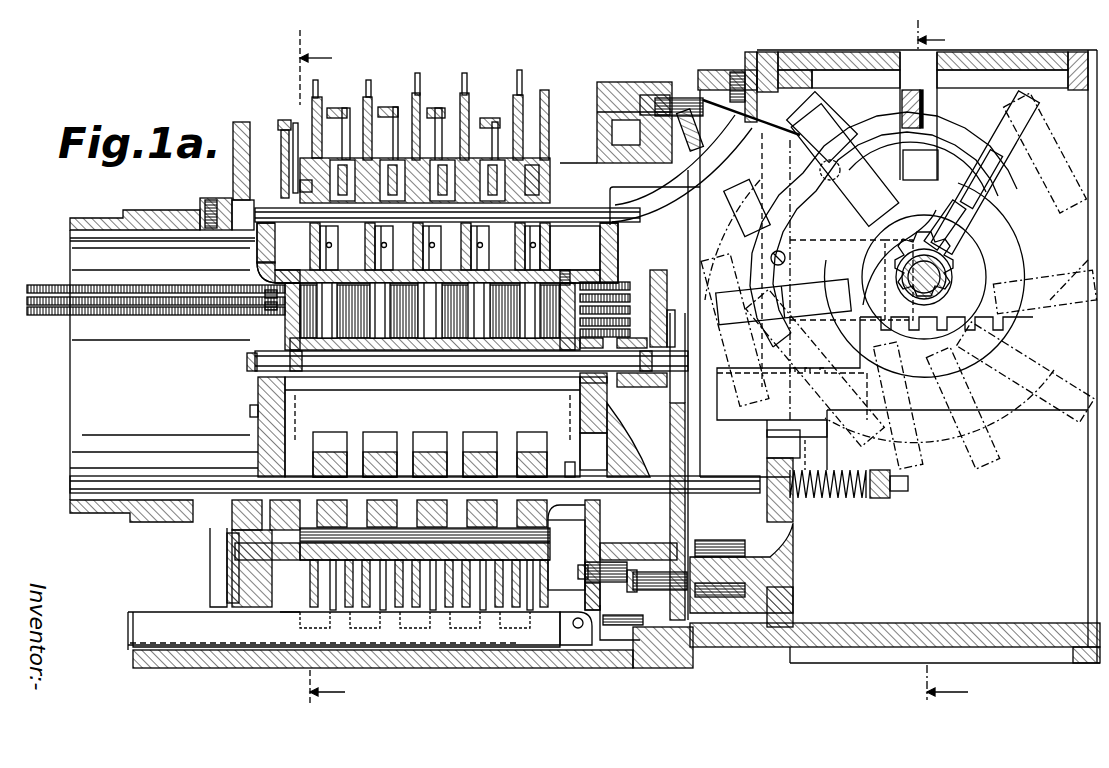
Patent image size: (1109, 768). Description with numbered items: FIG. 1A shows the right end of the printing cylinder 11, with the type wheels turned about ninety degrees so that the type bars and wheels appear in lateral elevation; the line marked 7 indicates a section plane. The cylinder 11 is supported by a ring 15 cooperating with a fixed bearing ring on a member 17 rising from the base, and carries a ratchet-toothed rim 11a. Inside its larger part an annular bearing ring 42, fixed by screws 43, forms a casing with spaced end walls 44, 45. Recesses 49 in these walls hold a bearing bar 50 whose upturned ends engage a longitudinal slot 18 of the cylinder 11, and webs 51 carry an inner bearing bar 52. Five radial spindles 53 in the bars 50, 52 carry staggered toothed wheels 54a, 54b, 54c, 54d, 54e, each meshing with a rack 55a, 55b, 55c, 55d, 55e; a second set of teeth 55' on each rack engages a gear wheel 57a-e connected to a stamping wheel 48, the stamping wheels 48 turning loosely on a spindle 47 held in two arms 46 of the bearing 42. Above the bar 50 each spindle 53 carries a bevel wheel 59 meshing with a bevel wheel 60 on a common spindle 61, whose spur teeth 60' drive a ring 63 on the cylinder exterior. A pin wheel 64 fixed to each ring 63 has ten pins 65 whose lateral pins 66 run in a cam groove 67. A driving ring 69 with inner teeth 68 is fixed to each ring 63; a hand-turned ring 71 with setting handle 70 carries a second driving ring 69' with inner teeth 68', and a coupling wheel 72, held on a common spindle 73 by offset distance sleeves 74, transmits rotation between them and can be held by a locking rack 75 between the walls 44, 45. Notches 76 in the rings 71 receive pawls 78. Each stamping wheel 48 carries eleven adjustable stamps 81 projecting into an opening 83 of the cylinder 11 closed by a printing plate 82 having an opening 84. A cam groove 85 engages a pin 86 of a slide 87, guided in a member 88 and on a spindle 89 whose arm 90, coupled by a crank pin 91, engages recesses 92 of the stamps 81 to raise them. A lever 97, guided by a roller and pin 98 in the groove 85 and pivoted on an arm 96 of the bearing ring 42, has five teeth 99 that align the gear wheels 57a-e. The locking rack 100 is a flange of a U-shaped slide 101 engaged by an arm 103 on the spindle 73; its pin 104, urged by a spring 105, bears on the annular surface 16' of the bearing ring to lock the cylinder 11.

The rim 11a is at (240, 124).
The longitudinal slot 18 is at (232, 205).
The section line 7 is at (322, 367).
The setting handle 70 is at (314, 84).
The ring 71 is at (312, 101).
The pin wheel 64 is at (292, 141).
The ring 63 is at (282, 166).
The cam groove 67 is at (300, 186).
The pin 66 is at (342, 120).
The pins 65 is at (388, 107).
The webs 51 is at (265, 327).
The recesses 49 is at (262, 246).
The bevel wheel 59 is at (387, 248).
The bevel wheel 60 is at (442, 248).
The spur teeth 60' is at (417, 248).
The bearing bar 50 is at (555, 270).
The toothed rack 55a is at (250, 270).
The toothed rack 55b is at (118, 305).
The toothed rack 55c is at (182, 315).
The toothed wheel 54a is at (330, 310).
The toothed wheel 54b is at (380, 310).
The toothed wheel 54c is at (428, 327).
The toothed wheel 54d is at (473, 327).
The toothed wheel 54e is at (520, 327).
The inner bearing bar 52 is at (471, 361).
The radial spindles 53 is at (471, 361).
The spindle 89 is at (260, 362).
The toothed rack 55d is at (678, 318).
The toothed rack 55e is at (662, 328).
The end wall 45 is at (268, 443).
The locking rack 75 is at (355, 437).
The coupling wheel 72 is at (525, 437).
The offset distance sleeves 74 is at (568, 462).
The end wall 44 is at (600, 390).
The slide 87 is at (670, 423).
The common spindle 73 is at (265, 488).
The printing cylinder 11 is at (225, 488).
The inner teeth 68 is at (392, 522).
The driving ring 69 is at (404, 545).
The notches 76 is at (330, 620).
The second driving ring 69' is at (431, 626).
The inner teeth 68' is at (425, 626).
The pawls 78 is at (320, 605).
The locking rack 100 is at (500, 618).
The U-shaped slide 101 is at (205, 628).
The pin 104 is at (615, 560).
The arm 103 is at (589, 570).
The ring 15 is at (585, 598).
The pin 86 is at (650, 595).
The annular surface 16' is at (622, 371).
The member 17 is at (675, 640).
The annular bearing ring 42 is at (793, 598).
The member 88 is at (720, 560).
The spring 105 is at (840, 500).
The opening 84 is at (897, 60).
The printing plate 82 is at (1000, 60).
The opening 83 is at (1058, 78).
The stamps 81 is at (990, 482).
The crank pin 91 is at (902, 100).
The recesses 92 is at (924, 95).
The screws 43 is at (738, 72).
The cam groove 85 is at (648, 95).
The pin 98 is at (675, 98).
The lever 97 is at (690, 150).
The common spindle 61 is at (682, 168).
The arm 90 is at (705, 205).
The arm 96 is at (835, 184).
The arms 46 is at (900, 248).
The gear wheels 57a-e is at (960, 262).
The spindle 47 is at (935, 322).
The second set of teeth 55' is at (864, 377).
The teeth 99 is at (960, 230).
The stamping wheels 48 is at (1050, 175).